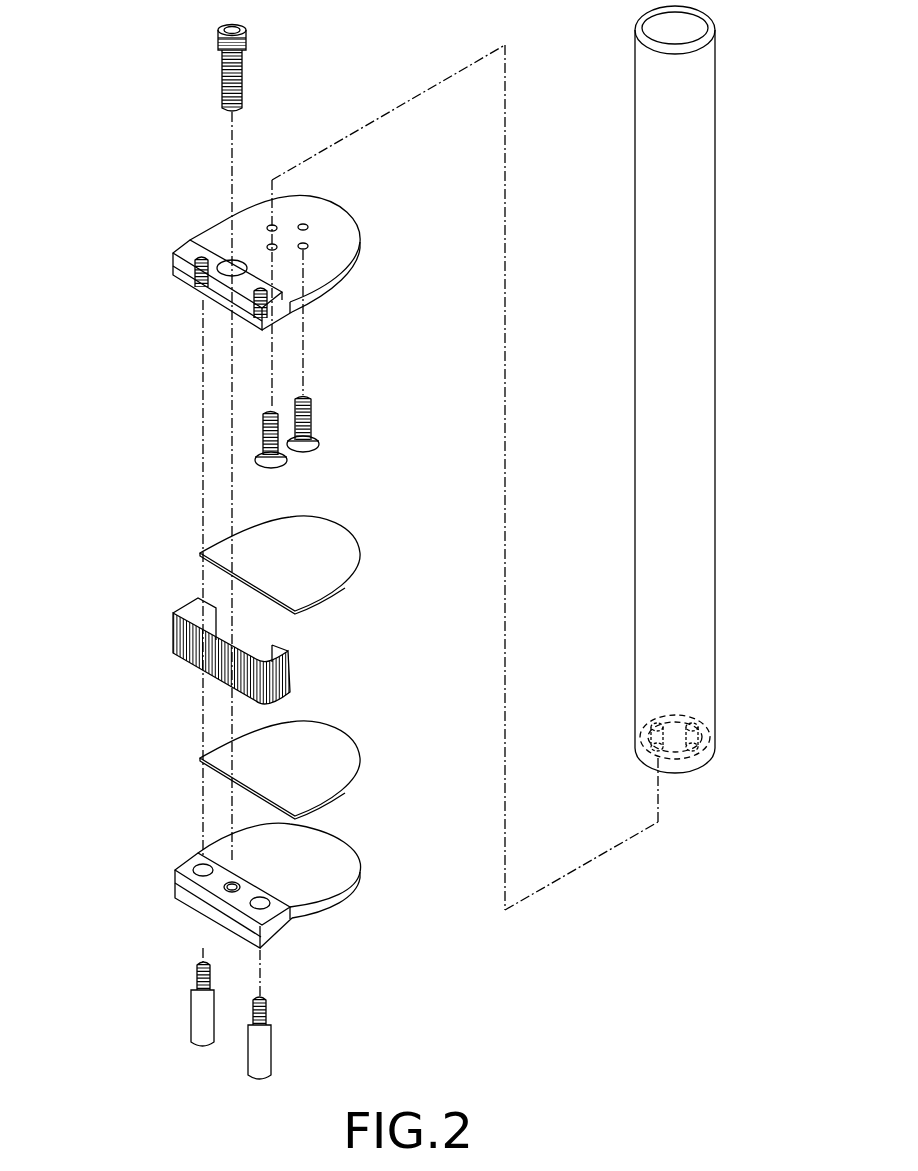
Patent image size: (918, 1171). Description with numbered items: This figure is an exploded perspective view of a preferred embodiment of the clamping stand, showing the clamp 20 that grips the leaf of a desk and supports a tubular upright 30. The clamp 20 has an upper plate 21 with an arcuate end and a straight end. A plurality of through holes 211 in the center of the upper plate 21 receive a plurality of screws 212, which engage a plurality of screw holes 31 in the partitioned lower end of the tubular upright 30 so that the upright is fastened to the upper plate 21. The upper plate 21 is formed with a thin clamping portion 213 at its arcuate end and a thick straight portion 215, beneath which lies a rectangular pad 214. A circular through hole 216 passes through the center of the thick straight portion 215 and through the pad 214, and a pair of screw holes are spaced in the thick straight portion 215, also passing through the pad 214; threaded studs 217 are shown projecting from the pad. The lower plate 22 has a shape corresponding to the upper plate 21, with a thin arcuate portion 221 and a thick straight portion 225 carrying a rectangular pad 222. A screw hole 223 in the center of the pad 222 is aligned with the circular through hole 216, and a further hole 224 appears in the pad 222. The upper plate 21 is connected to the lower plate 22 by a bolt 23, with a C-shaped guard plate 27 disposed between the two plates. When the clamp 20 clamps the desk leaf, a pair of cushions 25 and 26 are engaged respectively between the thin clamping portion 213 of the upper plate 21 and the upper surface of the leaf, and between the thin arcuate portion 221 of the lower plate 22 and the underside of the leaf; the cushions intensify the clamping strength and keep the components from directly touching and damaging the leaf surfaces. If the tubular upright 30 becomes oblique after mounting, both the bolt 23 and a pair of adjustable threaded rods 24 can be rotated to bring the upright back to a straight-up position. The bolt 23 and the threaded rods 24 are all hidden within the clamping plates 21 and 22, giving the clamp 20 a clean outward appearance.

The clamp 20 is at (133, 477).
The upper plate 21 is at (368, 253).
The through holes 211 is at (307, 228).
The screws 212 is at (310, 422).
The thin clamping portion 213 is at (348, 270).
The rectangular pad 214 is at (193, 292).
The thick straight portion 215 is at (300, 318).
The circular through hole 216 is at (228, 262).
The threaded studs 217 is at (197, 260).
The lower plate 22 is at (372, 880).
The thin arcuate portion 221 is at (333, 853).
The rectangular pad 222 is at (208, 883).
The screw hole 223 is at (218, 886).
The hole 224 is at (203, 866).
The thick straight portion 225 is at (292, 915).
The bolt 23 is at (222, 85).
The adjustable threaded rods 24 is at (200, 1015).
The cushion 25 is at (340, 557).
The cushion 26 is at (335, 757).
The C-shaped guard plate 27 is at (185, 637).
The tubular upright 30 is at (728, 315).
The screw holes 31 is at (700, 733).